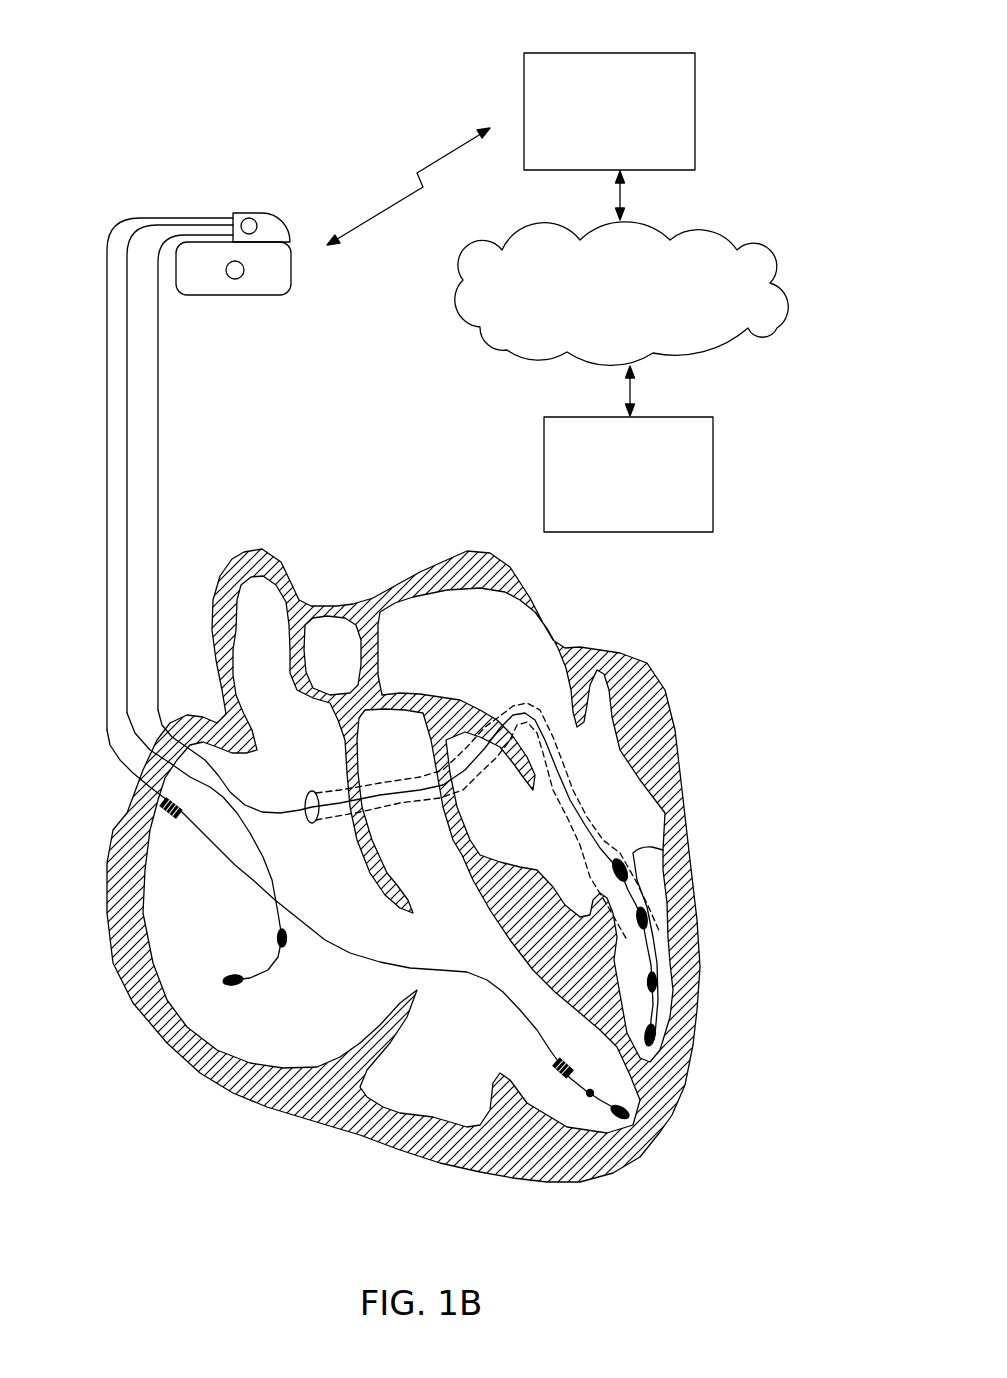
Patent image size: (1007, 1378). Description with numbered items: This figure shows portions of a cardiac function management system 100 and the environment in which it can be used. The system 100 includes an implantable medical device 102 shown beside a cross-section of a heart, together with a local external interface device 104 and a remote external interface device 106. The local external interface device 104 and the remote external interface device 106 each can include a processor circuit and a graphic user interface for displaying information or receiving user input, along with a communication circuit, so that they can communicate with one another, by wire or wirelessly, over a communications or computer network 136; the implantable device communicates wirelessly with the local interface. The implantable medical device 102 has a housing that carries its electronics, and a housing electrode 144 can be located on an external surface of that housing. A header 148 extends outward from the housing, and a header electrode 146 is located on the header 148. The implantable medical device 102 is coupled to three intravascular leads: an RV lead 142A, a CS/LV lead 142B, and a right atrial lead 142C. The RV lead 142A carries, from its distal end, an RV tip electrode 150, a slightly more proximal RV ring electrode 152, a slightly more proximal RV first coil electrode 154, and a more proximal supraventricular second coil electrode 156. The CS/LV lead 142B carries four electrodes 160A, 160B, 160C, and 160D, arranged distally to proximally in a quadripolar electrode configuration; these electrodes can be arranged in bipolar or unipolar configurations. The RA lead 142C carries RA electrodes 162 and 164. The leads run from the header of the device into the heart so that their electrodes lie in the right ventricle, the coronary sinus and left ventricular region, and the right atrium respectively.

The cardiac function management system 100 is at (126, 143).
The implantable medical device 102 is at (198, 293).
The local external interface device 104 is at (695, 108).
The remote external interface device 106 is at (713, 470).
The communications or computer network 136 is at (705, 230).
The RV lead 142A is at (107, 242).
The CS/LV lead 142B is at (128, 373).
The RA lead 142C is at (158, 502).
The housing electrode 144 is at (240, 272).
The header electrode 146 is at (249, 218).
The header 148 is at (275, 214).
The RV tip electrode 150 is at (612, 1112).
The RV ring electrode 152 is at (591, 1091).
The RV first coil electrode 154 is at (555, 1065).
The supraventricular second coil electrode 156 is at (173, 818).
The electrode 160A is at (657, 1013).
The electrode 160B is at (660, 977).
The electrode 160C is at (647, 913).
The electrode 160D is at (648, 862).
The RA electrode 162 is at (287, 940).
The RA electrode 164 is at (238, 986).